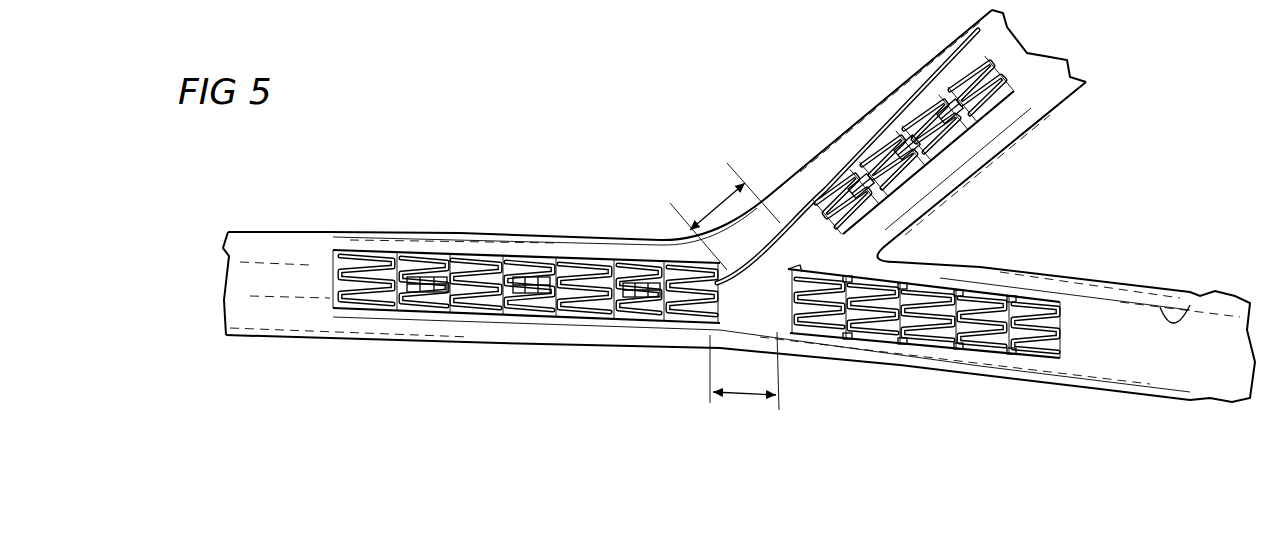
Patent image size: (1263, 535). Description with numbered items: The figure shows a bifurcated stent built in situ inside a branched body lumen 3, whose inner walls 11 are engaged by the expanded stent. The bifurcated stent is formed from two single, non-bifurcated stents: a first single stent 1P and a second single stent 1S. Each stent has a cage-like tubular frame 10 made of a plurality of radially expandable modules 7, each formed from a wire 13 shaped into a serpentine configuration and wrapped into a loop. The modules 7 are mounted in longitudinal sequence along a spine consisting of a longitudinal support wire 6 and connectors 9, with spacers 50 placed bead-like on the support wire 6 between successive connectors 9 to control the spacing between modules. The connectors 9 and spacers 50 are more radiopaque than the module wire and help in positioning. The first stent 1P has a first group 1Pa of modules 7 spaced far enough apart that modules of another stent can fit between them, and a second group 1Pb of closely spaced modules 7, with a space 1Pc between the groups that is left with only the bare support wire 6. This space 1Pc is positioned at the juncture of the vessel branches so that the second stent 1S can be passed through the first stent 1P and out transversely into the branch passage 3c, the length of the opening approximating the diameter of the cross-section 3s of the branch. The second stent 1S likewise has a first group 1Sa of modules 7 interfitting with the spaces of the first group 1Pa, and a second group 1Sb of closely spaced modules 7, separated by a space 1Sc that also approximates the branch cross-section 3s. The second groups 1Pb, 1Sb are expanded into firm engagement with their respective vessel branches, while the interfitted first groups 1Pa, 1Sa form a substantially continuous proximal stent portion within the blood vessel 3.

The body lumen 3 is at (330, 282).
The branch passage 3c is at (1013, 63).
The cross-section of the branch passage 3s is at (795, 192).
The walls 11 is at (325, 268).
The first single stent 1P is at (378, 300).
The first group of modules 1Pa is at (587, 269).
The second group of modules 1Pb is at (1043, 316).
The space 1Pc is at (744, 371).
The second single stent 1S is at (437, 300).
The first group of modules of second stent 1Sa is at (538, 303).
The second group of modules of second stent 1Sb is at (915, 180).
The space 1Sc is at (725, 216).
The longitudinal support wire 6 is at (466, 257).
The module 7 is at (533, 262).
The connector 9 is at (420, 262).
The tubular frame 10 is at (357, 253).
The wire 13 is at (1000, 100).
The spacer 50 is at (647, 257).